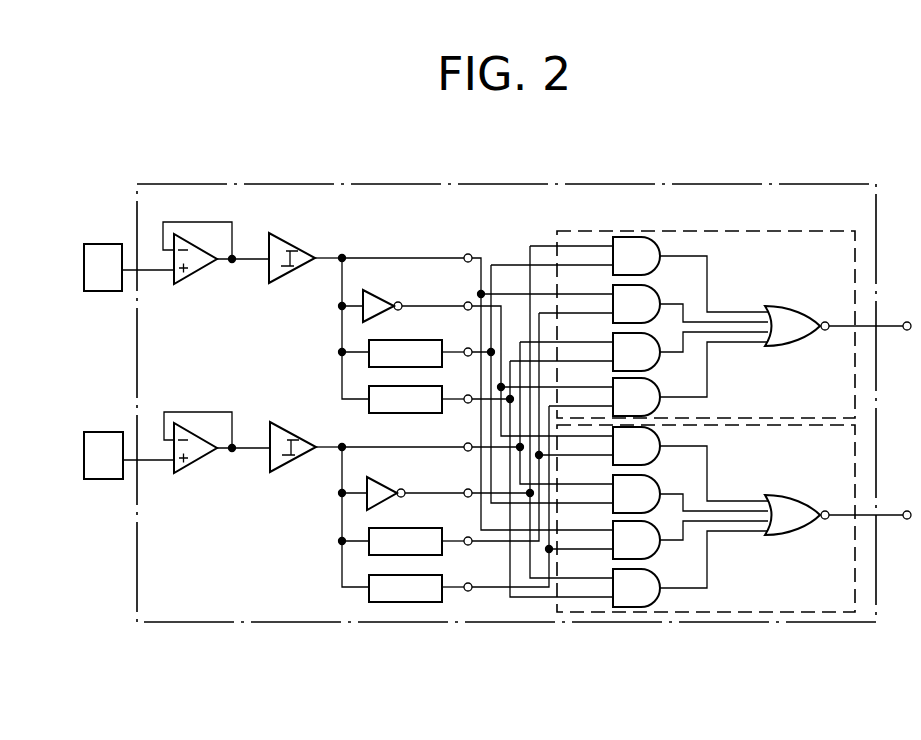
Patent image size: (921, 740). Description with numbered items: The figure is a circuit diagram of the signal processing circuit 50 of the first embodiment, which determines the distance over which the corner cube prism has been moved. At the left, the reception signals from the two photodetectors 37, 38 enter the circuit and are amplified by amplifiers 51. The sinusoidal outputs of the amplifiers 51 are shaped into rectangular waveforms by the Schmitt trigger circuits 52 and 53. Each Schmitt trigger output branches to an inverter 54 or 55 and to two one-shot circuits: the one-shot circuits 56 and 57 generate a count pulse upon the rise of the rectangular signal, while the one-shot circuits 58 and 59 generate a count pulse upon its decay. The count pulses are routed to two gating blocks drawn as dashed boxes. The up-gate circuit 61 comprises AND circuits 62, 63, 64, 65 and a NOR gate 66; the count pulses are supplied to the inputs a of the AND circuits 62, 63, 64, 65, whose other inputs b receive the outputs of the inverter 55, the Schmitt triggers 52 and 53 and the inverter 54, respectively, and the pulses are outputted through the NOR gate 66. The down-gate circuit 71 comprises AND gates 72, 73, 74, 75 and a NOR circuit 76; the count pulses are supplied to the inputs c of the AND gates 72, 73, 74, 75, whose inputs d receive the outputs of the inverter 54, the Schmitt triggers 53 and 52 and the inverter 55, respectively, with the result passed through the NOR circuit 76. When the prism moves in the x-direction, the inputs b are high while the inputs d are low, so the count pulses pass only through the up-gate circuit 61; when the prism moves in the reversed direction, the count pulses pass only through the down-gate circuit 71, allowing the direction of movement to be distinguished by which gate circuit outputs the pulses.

The photodetector 37 is at (93, 251).
The photodetector 38 is at (95, 436).
The signal processing circuit 50 is at (373, 184).
The amplifier 51 is at (199, 268).
The Schmitt trigger circuit 52 is at (290, 245).
The Schmitt trigger circuit 53 is at (289, 432).
The inverter 54 is at (374, 293).
The inverter 55 is at (384, 481).
The one-shot circuit 56 is at (413, 318).
The one-shot circuit 57 is at (426, 530).
The one-shot circuit 58 is at (422, 409).
The one-shot circuit 59 is at (433, 600).
The up-gate circuit 61 is at (768, 231).
The AND circuit 62 is at (657, 210).
The AND circuit 63 is at (654, 294).
The AND circuit 64 is at (652, 362).
The AND circuit 65 is at (652, 404).
The NOR gate 66 is at (790, 310).
The down-gate circuit 71 is at (800, 616).
The AND gate 72 is at (652, 442).
The AND gate 73 is at (650, 486).
The AND gate 74 is at (652, 552).
The AND gate 75 is at (651, 604).
The NOR circuit 76 is at (796, 498).